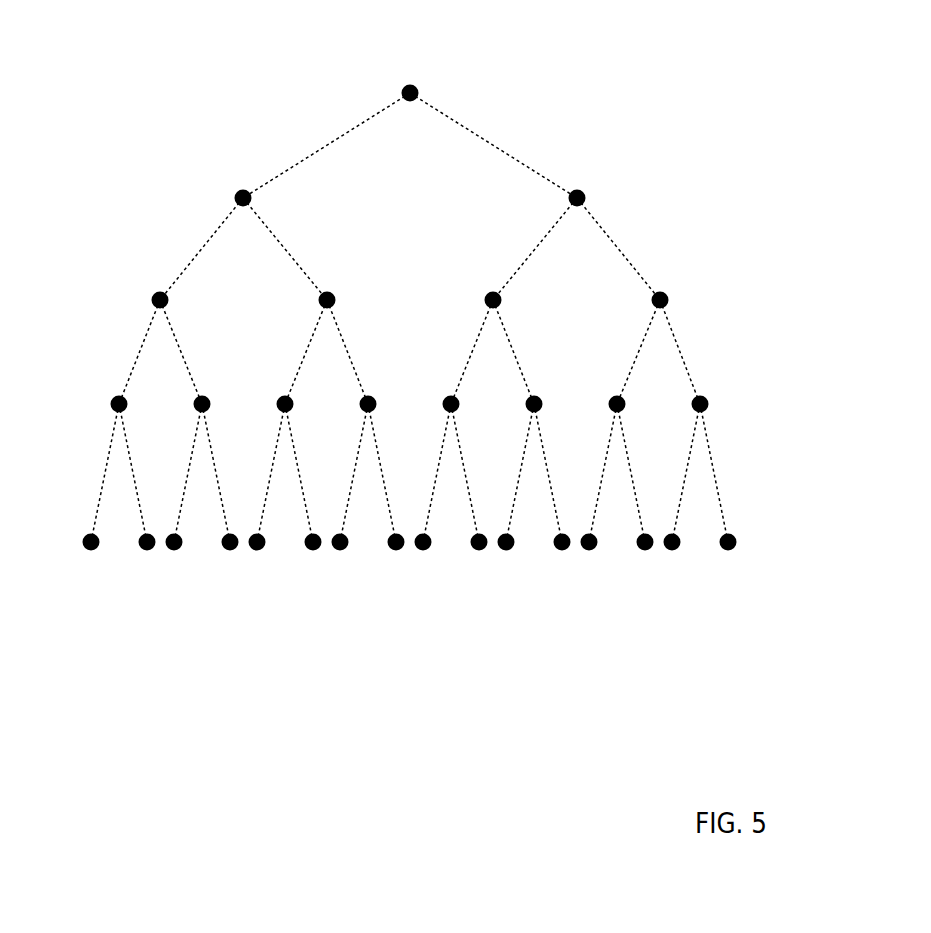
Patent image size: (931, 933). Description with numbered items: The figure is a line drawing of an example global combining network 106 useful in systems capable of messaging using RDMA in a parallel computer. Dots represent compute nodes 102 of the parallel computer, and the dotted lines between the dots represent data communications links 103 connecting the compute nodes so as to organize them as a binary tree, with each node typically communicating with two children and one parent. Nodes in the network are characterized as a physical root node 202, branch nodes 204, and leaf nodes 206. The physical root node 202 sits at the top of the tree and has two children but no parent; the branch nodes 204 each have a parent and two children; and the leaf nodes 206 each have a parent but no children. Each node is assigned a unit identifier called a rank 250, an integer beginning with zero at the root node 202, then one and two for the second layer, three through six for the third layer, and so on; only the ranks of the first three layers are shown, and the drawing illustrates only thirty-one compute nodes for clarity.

The compute nodes 102 is at (477, 549).
The data communications links 103 is at (333, 138).
The global combining network 106 is at (440, 395).
The physical root node 202 is at (533, 70).
The branch nodes 204 is at (748, 150).
The leaf nodes 206 is at (748, 577).
The rank 250 is at (540, 207).